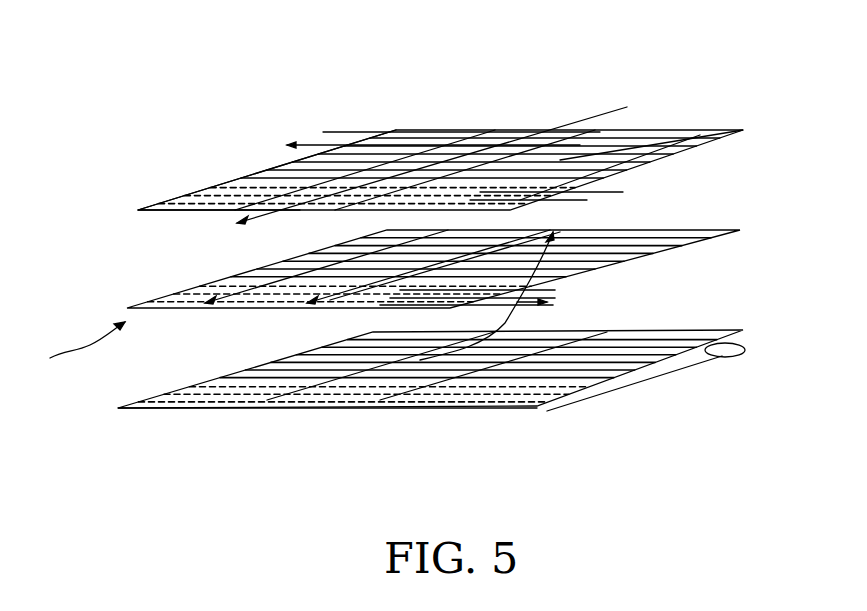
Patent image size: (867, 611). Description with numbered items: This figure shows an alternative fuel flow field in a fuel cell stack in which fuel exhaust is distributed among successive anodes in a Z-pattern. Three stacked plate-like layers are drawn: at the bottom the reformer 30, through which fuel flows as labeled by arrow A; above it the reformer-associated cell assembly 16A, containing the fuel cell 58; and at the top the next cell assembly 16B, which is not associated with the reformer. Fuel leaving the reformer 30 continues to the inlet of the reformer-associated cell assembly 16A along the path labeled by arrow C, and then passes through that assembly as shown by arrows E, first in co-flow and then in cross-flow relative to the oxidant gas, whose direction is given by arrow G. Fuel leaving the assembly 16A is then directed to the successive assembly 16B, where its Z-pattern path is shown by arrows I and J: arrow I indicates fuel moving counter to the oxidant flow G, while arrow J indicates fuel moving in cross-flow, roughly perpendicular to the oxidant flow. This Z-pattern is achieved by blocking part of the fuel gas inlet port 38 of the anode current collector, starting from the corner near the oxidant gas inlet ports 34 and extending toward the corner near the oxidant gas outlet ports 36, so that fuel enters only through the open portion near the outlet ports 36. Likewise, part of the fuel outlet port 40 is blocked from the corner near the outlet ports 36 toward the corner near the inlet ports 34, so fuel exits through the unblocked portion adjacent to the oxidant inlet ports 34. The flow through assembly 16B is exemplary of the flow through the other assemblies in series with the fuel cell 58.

The cell assembly not associated with the reformer 16B is at (723, 130).
The reformer-associated cell assembly 16A is at (720, 232).
The reformer 30 is at (187, 410).
The oxidant gas inlet ports 34 is at (522, 130).
The oxidant gas outlet ports 36 is at (197, 212).
The fuel gas inlet port 38 is at (627, 170).
The fuel outlet port 40 is at (265, 170).
The fuel cell 58 is at (74, 352).
The oxidant flow direction arrow G is at (497, 213).
The cross-flow fuel direction arrow J is at (643, 132).
The counter-flow fuel direction arrow I is at (667, 140).
The fuel flow arrows through reformer-associated assembly E is at (550, 301).
The fuel flow arrow from reformer to cell assembly C is at (517, 315).
The fuel flow arrow through reformer A is at (357, 408).